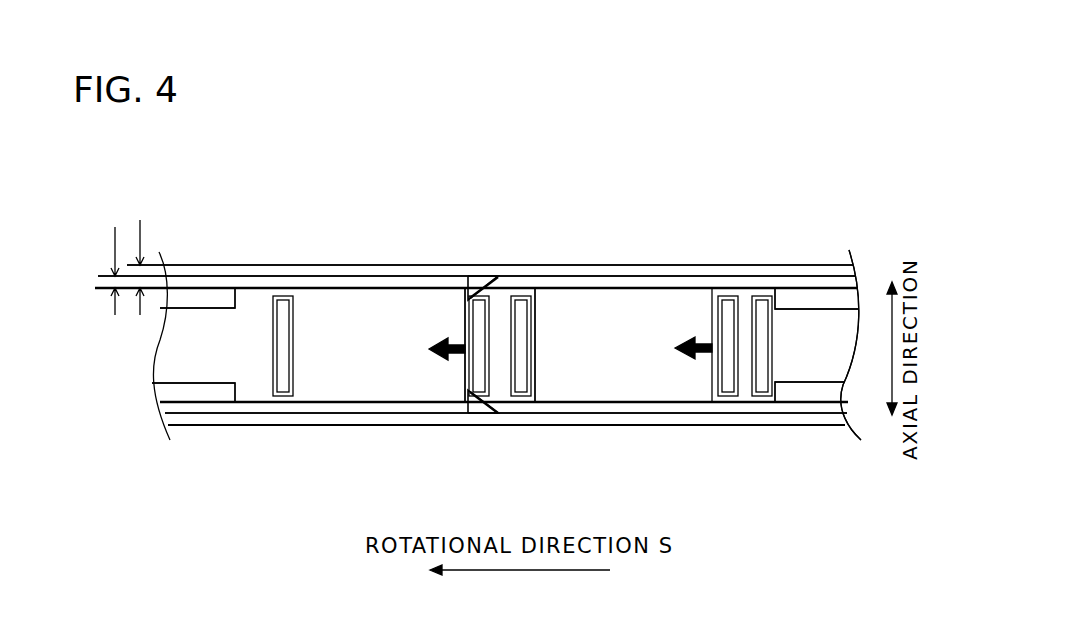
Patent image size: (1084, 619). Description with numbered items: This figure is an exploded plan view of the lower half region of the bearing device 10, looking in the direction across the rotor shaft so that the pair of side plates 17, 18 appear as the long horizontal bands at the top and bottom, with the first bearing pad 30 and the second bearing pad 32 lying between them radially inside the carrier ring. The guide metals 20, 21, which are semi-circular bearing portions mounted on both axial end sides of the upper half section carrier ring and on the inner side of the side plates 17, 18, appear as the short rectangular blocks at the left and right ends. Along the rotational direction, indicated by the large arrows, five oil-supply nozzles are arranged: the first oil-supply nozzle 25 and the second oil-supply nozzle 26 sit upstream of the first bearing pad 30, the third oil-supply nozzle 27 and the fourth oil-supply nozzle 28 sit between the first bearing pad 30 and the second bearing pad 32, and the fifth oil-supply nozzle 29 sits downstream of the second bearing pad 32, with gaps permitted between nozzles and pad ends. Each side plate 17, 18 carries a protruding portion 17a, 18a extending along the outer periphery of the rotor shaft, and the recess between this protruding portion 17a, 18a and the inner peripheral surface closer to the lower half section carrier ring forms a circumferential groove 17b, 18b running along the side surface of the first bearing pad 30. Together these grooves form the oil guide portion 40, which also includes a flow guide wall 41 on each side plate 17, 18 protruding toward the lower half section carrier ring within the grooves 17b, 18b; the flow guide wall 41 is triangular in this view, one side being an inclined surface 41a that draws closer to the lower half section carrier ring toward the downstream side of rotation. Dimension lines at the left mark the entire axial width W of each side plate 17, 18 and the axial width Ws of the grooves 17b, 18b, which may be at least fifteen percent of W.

The bearing device 10 is at (767, 208).
The side plate 17 is at (646, 427).
The protruding portion 17a is at (583, 426).
The groove 17b is at (618, 414).
The side plate 18 is at (624, 266).
The protruding portion 18a is at (562, 267).
The groove 18b is at (596, 277).
The guide metal 20 is at (203, 392).
The guide metal 21 is at (208, 298).
The first oil-supply nozzle 25 is at (759, 404).
The second oil-supply nozzle 26 is at (722, 400).
The third oil-supply nozzle 27 is at (515, 308).
The fourth oil-supply nozzle 28 is at (460, 322).
The fifth oil-supply nozzle 29 is at (272, 320).
The first bearing pad 30 is at (666, 300).
The second bearing pad 32 is at (371, 300).
The oil guide portion 40 is at (455, 432).
The flow guide wall 41 is at (478, 268).
The inclined surface 41a is at (497, 277).
The entire width of side plate W is at (152, 267).
The axial-directional width of grooves Ws is at (100, 271).